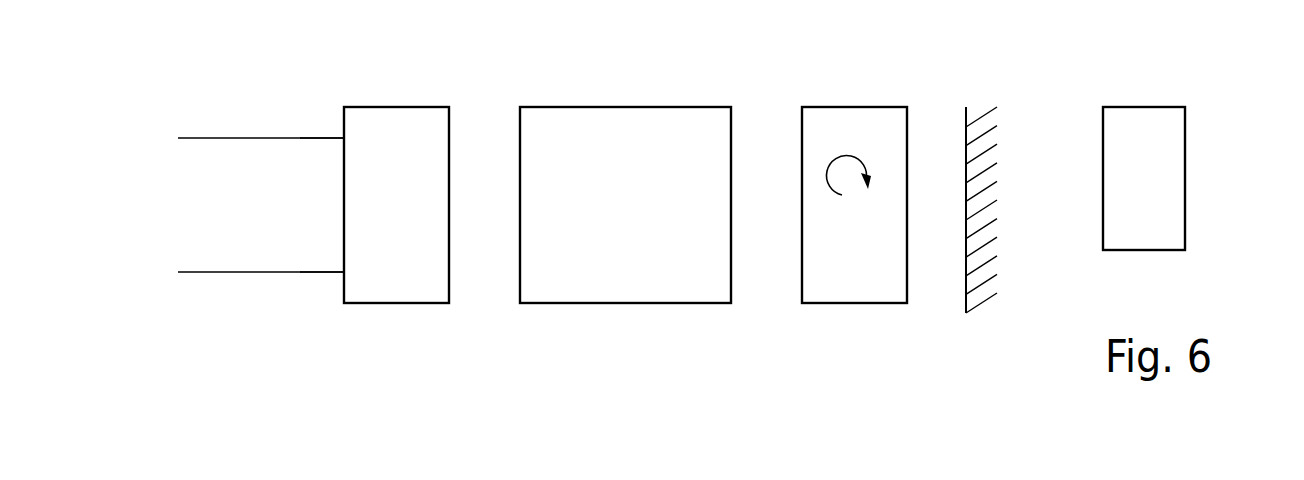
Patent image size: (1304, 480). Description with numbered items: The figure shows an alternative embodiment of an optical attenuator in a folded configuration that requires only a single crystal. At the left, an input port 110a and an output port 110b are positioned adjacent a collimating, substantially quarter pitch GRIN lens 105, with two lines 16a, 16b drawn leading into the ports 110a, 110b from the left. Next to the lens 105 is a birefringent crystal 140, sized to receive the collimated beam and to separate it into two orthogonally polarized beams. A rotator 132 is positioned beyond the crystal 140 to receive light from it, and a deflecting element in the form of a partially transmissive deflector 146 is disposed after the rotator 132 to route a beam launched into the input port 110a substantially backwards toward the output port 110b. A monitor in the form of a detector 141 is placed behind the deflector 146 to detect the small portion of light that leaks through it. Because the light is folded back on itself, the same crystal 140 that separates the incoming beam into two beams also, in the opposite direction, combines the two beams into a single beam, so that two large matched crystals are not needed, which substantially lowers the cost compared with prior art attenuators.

The input optical fiber 16a is at (263, 137).
The output optical fiber 16b is at (208, 273).
The input port 110a is at (342, 137).
The output port 110b is at (341, 273).
The GRIN lens 105 is at (398, 107).
The birefringent crystal 140 is at (607, 107).
The rotator 132 is at (837, 107).
The partially transmissive deflector 146 is at (967, 110).
The detector 141 is at (1185, 152).